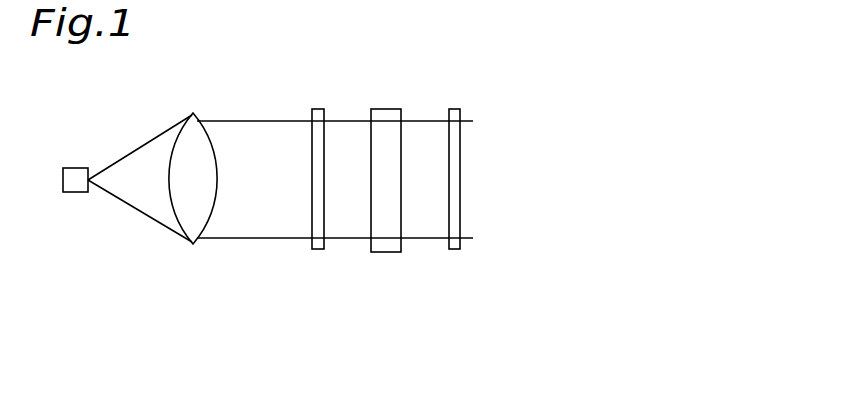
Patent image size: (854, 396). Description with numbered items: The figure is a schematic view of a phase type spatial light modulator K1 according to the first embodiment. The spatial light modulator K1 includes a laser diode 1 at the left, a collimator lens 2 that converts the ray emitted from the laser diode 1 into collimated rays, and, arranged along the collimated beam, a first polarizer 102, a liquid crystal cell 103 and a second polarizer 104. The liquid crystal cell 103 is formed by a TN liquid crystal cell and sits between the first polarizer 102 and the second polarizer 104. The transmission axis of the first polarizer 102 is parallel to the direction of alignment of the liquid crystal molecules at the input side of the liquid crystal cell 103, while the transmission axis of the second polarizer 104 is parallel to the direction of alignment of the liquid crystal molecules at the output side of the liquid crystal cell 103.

The laser diode 1 is at (70, 192).
The collimator lens 2 is at (191, 245).
The first polarizer 102 is at (318, 249).
The liquid crystal cell 103 is at (385, 252).
The second polarizer 104 is at (453, 249).
The phase type spatial light modulator K1 is at (340, 72).